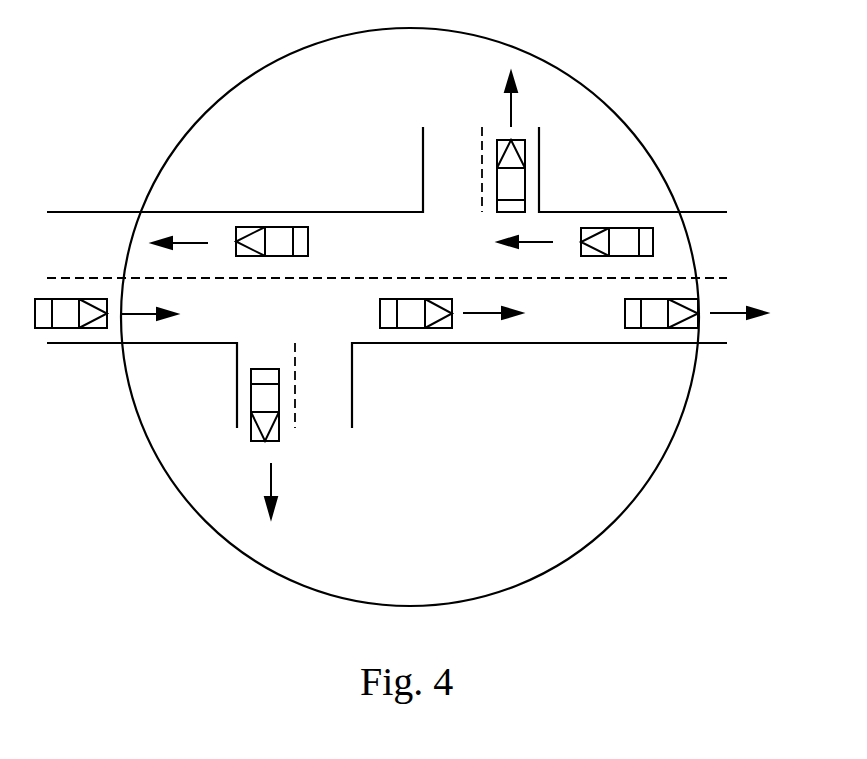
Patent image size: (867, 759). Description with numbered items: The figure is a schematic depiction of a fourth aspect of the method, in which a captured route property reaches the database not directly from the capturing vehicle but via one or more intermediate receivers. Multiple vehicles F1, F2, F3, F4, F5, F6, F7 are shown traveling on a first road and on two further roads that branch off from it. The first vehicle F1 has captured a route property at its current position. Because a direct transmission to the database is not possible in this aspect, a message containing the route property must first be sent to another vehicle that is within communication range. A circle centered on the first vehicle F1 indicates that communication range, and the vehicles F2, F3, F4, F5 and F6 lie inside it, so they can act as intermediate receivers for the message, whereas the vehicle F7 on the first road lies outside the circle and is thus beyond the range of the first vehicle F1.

The first vehicle F1 is at (451, 354).
The second vehicle F2 is at (696, 355).
The third vehicle F3 is at (575, 202).
The fourth vehicle F4 is at (496, 142).
The fifth vehicle F5 is at (230, 202).
The sixth vehicle F6 is at (243, 443).
The seventh vehicle F7 is at (106, 345).